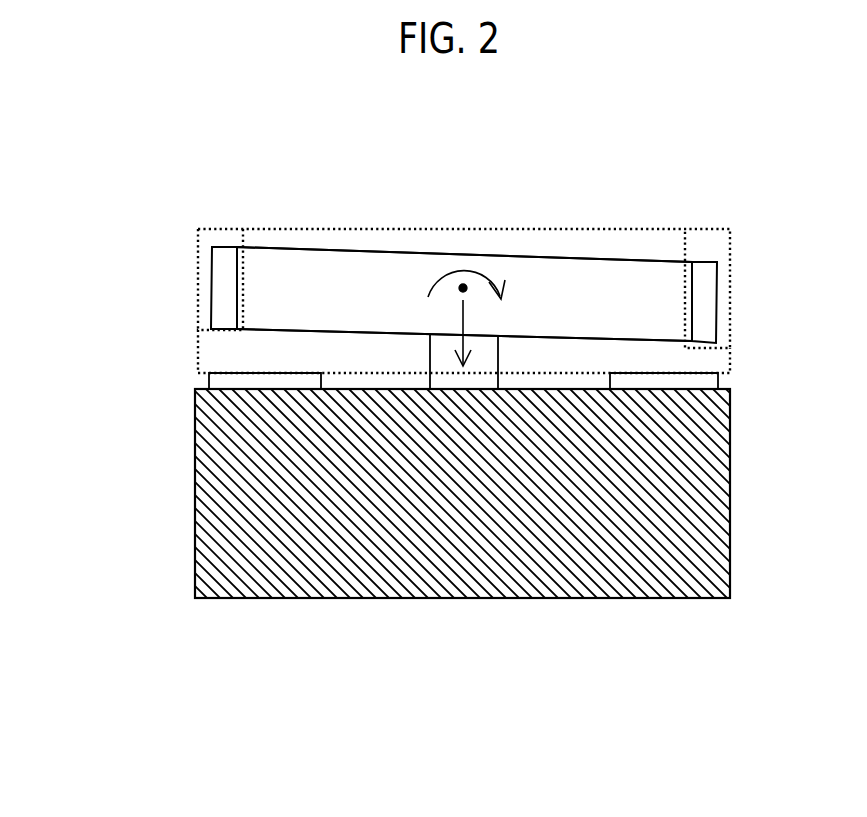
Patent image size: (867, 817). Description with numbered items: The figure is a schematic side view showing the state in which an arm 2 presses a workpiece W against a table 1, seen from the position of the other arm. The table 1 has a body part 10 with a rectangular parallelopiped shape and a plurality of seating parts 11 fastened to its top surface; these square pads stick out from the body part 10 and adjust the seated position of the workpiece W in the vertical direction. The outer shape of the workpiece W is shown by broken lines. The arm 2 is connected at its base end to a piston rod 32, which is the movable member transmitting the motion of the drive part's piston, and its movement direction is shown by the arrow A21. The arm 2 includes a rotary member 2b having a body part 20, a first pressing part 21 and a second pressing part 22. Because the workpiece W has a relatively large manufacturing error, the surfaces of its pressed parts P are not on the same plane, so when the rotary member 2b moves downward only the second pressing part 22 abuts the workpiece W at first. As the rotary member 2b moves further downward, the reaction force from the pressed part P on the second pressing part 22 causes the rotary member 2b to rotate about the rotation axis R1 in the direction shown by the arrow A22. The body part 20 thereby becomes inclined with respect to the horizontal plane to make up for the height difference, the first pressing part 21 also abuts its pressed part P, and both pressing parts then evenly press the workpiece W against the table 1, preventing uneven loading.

The table 1 is at (735, 638).
The arm 2 is at (198, 231).
The rotary member 2b is at (310, 247).
The body part 10 is at (493, 598).
The seating parts 11 is at (220, 383).
The body part 20 is at (410, 277).
The first pressing part 21 is at (705, 278).
The second pressing part 22 is at (225, 258).
The piston rod 32 is at (500, 358).
The arrow showing movement direction of the arm A21 is at (464, 317).
The arrow showing rotation direction of the rotary member A22 is at (462, 267).
The pressed parts P is at (222, 325).
The rotation axis R1 is at (463, 288).
The workpiece W is at (732, 251).